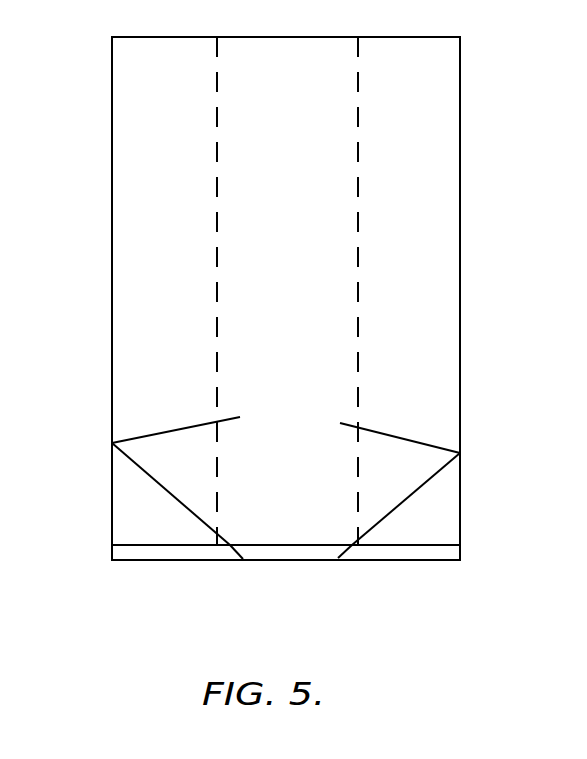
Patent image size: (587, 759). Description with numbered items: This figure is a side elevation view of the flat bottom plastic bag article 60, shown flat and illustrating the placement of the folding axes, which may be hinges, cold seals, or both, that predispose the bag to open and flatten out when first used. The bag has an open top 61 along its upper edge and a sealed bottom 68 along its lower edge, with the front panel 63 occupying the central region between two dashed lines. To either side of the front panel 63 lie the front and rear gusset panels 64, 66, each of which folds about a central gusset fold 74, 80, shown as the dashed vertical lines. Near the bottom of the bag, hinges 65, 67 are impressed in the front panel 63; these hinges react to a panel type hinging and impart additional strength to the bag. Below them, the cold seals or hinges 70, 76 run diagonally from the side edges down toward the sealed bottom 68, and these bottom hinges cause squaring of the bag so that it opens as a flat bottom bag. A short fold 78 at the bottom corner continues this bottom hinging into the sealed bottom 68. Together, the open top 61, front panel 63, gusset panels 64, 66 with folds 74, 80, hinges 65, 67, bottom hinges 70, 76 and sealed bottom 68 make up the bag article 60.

The container blank 60 is at (474, 190).
The open top 61 is at (281, 36).
The front panel 63 is at (299, 266).
The gusset panel 64 is at (130, 154).
The hinge 65 is at (150, 434).
The gusset panel 66 is at (430, 278).
The hinge 67 is at (410, 440).
The sealed bottom 68 is at (290, 545).
The cold seal/hinge 70 is at (150, 480).
The central gusset fold 74 is at (217, 397).
The cold seal/hinge 76 is at (425, 480).
The gusset fold 78 is at (353, 558).
The central gusset fold 80 is at (360, 413).